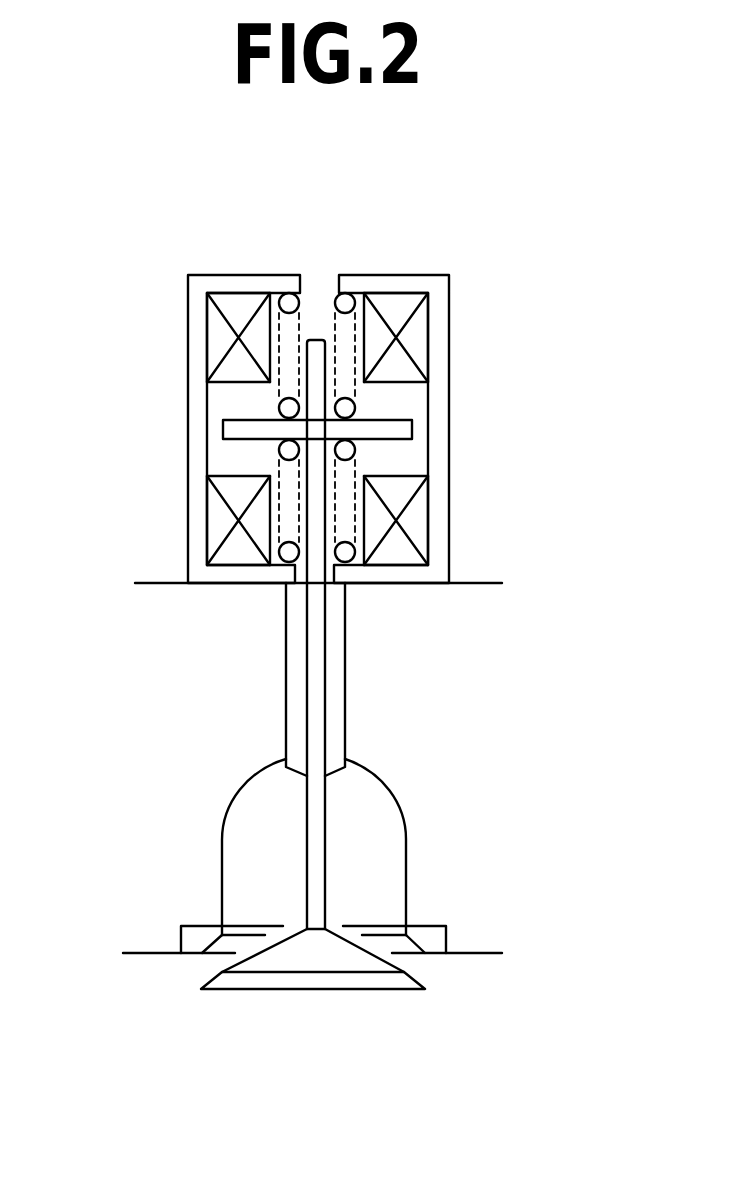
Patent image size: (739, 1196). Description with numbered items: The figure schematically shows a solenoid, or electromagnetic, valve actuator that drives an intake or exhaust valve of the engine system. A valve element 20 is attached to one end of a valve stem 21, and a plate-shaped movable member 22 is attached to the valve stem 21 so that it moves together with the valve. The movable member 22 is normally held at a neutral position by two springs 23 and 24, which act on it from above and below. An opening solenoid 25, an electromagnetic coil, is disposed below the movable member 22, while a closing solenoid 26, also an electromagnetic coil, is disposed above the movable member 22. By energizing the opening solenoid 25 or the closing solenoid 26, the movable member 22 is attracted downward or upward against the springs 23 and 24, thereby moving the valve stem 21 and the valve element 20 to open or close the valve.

The valve element 20 is at (418, 983).
The valve stem 21 is at (325, 837).
The movable member 22 is at (412, 428).
The spring 23 is at (280, 393).
The spring 24 is at (280, 462).
The opening solenoid 25 is at (218, 520).
The closing solenoid 26 is at (223, 337).